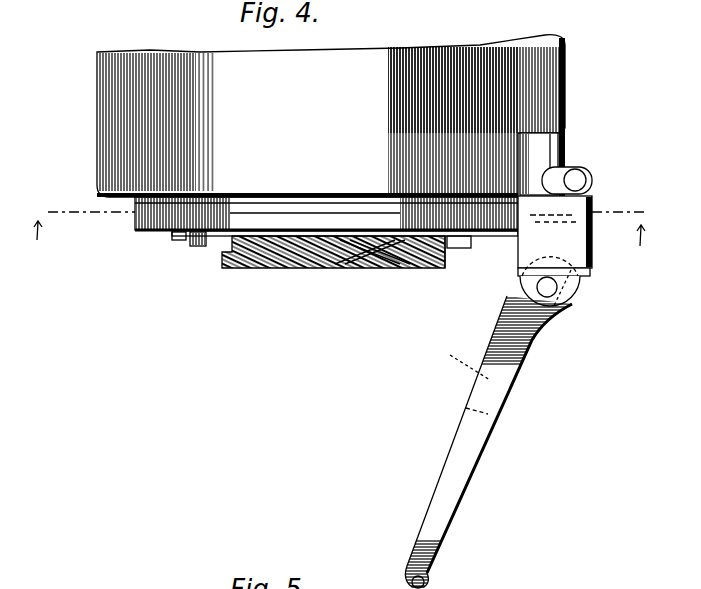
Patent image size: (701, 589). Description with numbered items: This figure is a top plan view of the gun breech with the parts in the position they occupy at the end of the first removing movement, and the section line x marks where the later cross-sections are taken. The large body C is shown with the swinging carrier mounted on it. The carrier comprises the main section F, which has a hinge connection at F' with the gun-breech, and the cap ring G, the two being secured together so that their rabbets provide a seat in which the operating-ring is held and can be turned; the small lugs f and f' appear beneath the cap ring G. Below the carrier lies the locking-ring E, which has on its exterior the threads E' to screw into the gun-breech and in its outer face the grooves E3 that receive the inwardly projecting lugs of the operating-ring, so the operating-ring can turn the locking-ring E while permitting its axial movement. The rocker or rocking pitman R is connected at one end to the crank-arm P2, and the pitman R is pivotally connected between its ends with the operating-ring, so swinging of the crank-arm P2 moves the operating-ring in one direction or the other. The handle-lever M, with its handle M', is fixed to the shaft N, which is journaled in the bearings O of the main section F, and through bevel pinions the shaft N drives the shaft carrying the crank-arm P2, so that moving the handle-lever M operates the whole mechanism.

The carriage body C is at (331, 116).
The main section of swinging carrier F is at (326, 180).
The hinge connection F' is at (580, 174).
The cap ring G is at (140, 234).
The lug f is at (172, 250).
The lug f' is at (196, 252).
The rocker or rocking pitman R is at (459, 250).
The locking-ring E is at (333, 262).
The grooves E3 is at (372, 264).
The external threads E' is at (422, 263).
The crank-arm P2 is at (512, 234).
The section line x x is at (337, 223).
The bearings O is at (584, 291).
The shaft N is at (556, 290).
The handle-lever M is at (490, 441).
The handle M' is at (472, 560).